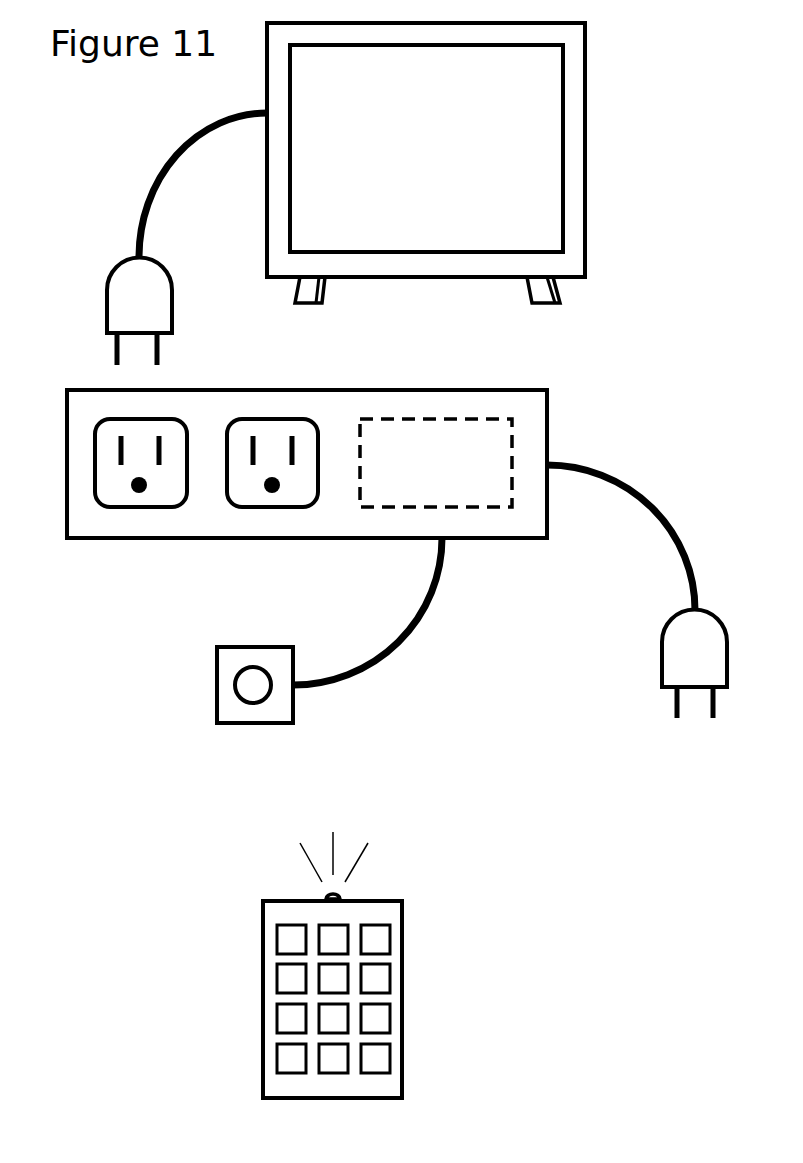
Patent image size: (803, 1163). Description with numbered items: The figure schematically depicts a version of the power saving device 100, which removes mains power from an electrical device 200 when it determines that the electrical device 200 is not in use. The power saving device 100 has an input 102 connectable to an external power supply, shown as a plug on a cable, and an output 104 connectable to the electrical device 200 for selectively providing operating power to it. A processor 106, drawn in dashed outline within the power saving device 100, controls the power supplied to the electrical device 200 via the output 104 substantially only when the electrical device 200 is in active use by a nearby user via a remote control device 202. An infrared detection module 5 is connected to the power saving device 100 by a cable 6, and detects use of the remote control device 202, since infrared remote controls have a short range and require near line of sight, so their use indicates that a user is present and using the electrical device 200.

The electrical device 200 is at (448, 162).
The power saving device 100 is at (547, 390).
The output 104 is at (178, 423).
The processor 106 is at (461, 438).
The input 102 is at (662, 670).
The cable 6 is at (390, 648).
The infrared detection module 5 is at (217, 647).
The remote control device 202 is at (263, 965).